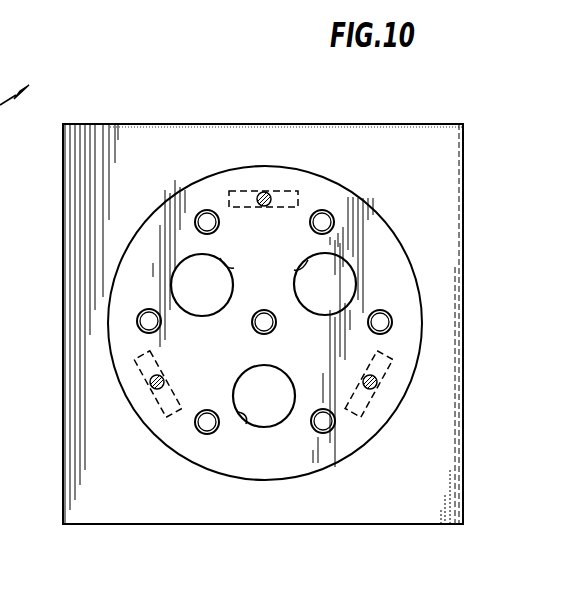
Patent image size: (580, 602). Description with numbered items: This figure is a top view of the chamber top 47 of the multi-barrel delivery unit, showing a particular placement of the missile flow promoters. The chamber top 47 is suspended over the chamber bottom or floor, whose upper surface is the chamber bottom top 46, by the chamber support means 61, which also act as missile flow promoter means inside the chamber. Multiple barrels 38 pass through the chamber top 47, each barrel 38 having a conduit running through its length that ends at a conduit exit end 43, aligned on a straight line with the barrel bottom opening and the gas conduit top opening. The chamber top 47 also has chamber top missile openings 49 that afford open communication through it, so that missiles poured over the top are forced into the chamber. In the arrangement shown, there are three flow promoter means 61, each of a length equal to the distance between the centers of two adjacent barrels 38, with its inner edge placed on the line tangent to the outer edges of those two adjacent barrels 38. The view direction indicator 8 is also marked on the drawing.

The view direction arrow 8 is at (21, 85).
The barrel 38 is at (386, 308).
The conduit exit end 43 is at (207, 211).
The chamber bottom top 46 is at (263, 351).
The chamber top 47 is at (312, 172).
The chamber top missile opening 49 is at (302, 269).
The chamber support means 61 is at (246, 190).